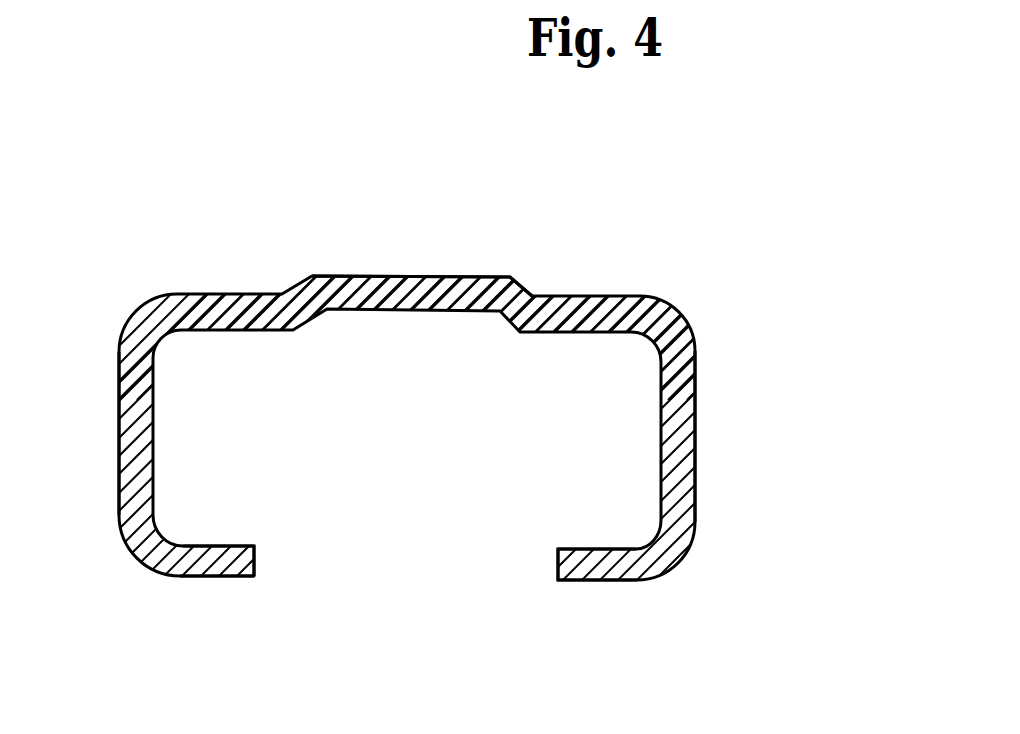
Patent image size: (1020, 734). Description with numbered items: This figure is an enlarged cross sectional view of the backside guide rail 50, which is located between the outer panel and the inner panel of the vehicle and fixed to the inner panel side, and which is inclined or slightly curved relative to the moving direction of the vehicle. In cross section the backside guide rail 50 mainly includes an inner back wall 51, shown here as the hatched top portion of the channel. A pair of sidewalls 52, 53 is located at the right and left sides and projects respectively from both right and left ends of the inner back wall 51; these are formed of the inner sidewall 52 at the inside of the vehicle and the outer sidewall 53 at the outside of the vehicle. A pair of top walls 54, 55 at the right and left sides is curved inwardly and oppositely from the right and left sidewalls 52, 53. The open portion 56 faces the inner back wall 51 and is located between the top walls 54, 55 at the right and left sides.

The backside guide rail 50 is at (191, 167).
The inner back wall 51 is at (412, 277).
The inner sidewall 52 is at (697, 442).
The outer sidewall 53 is at (118, 418).
The top wall 54 is at (583, 573).
The top wall 55 is at (217, 568).
The open portion 56 is at (380, 545).